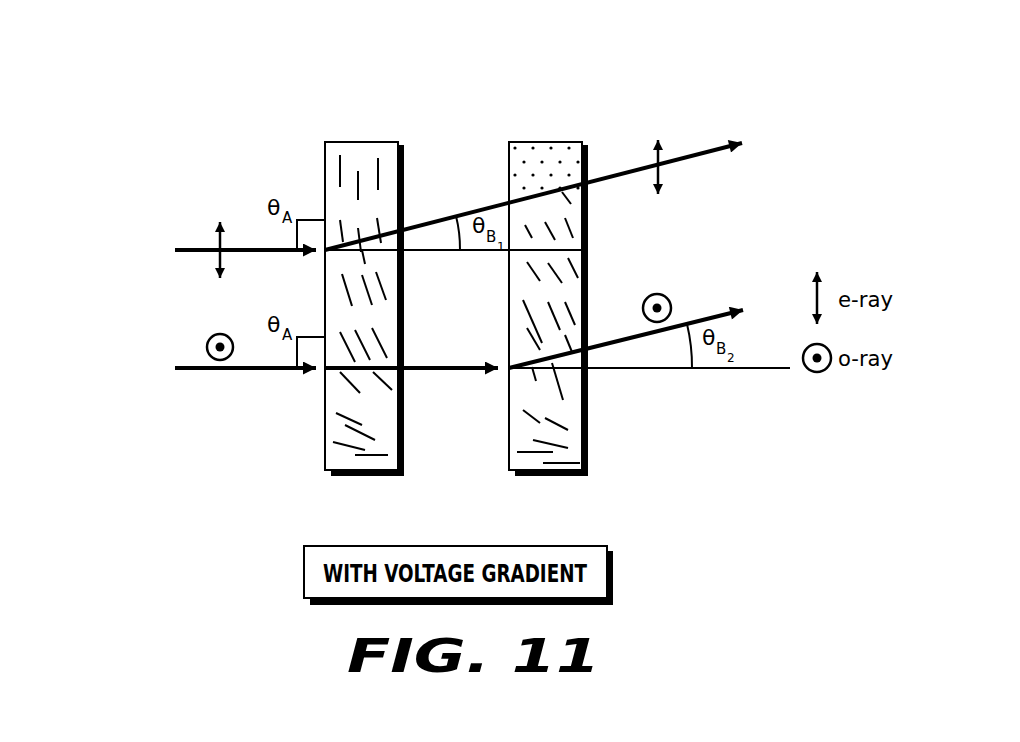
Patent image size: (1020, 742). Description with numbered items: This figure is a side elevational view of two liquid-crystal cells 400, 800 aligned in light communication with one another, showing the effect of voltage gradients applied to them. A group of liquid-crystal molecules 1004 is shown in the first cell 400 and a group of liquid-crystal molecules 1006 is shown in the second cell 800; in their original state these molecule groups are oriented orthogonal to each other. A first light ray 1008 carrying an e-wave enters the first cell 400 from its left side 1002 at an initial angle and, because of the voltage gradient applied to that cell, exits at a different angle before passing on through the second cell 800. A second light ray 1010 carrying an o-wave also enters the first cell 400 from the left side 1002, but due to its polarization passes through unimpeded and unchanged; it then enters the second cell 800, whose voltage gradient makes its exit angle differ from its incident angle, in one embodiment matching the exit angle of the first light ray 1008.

The first cell 400 is at (300, 131).
The second cell 800 is at (603, 132).
The left side 1002 is at (325, 447).
The group of liquid-crystal molecules 1004 is at (342, 207).
The group of liquid-crystal molecules 1006 is at (530, 215).
The first light ray 1008 is at (186, 248).
The second light ray 1010 is at (190, 371).